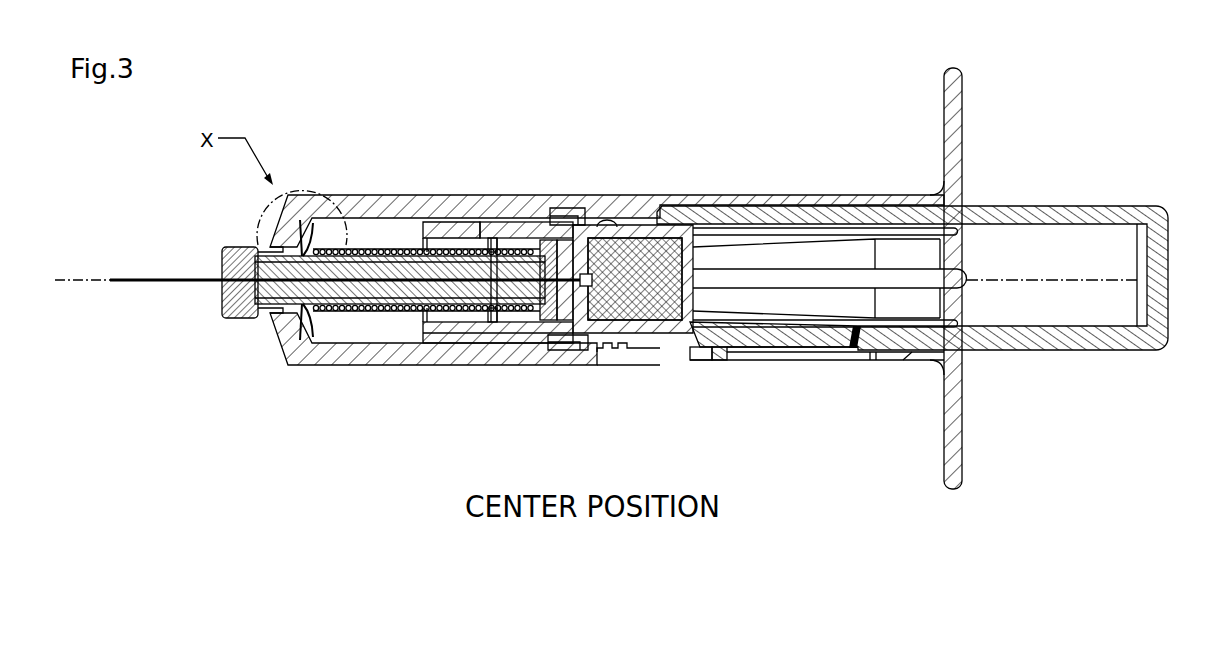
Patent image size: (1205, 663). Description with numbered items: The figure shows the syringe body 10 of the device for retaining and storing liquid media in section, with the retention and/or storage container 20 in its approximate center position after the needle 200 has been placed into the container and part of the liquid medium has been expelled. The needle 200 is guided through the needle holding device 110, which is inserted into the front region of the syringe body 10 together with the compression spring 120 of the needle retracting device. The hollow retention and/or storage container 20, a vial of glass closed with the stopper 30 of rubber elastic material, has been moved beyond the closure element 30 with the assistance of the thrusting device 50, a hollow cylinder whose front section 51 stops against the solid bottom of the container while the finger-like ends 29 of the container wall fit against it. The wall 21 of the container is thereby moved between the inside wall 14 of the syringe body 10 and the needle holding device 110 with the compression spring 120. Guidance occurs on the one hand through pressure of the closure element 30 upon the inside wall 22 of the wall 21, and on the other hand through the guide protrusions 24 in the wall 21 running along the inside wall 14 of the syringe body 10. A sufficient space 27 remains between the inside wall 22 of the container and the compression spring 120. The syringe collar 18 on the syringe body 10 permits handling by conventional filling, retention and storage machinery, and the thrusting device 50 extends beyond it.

The syringe body 10 is at (322, 350).
The inside wall 14 is at (493, 222).
The syringe collar 18 is at (963, 432).
The retention and/or storage container 20 is at (668, 335).
The wall 21 is at (463, 343).
The inside wall 22 is at (566, 208).
The guide protrusions 24 is at (432, 222).
The space 27 is at (486, 322).
The ends of the wall 29 is at (705, 348).
The stopper 30 is at (556, 322).
The thrusting device 50 is at (815, 347).
The front section 51 is at (851, 348).
The needle holding device 110 is at (360, 305).
The compression spring 120 is at (384, 236).
The needle 200 is at (178, 286).